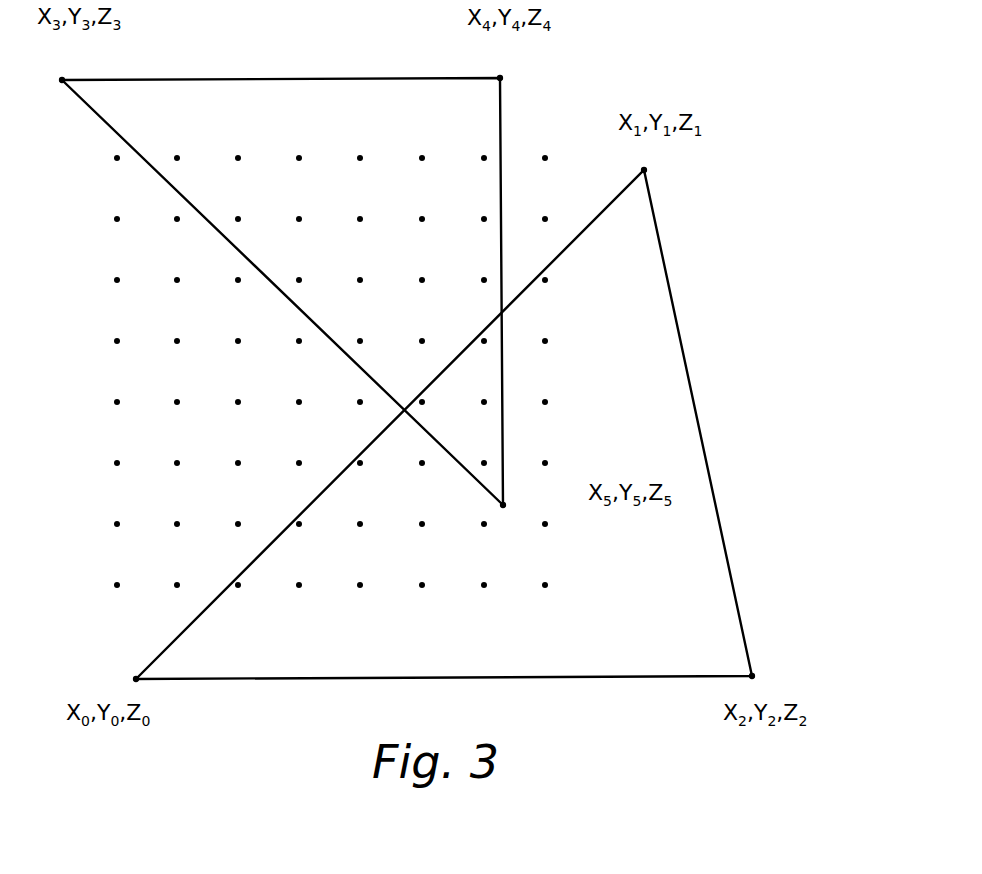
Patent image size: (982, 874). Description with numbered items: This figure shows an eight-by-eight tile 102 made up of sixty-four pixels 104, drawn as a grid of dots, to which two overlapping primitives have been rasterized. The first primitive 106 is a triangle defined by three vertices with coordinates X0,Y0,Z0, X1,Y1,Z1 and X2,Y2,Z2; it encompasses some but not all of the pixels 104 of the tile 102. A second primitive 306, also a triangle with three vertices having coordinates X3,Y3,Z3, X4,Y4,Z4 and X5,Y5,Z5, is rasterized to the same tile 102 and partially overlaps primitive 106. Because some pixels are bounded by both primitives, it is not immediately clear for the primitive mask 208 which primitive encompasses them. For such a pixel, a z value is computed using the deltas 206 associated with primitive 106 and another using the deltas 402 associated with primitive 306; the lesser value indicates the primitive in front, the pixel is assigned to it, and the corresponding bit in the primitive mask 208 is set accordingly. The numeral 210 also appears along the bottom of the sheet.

The tile 102 is at (332, 371).
The pixels 104 is at (115, 341).
The primitive 106 is at (698, 423).
The second primitive 306 is at (282, 79).
The deltas 206 is at (228, 873).
The primitive mask 208 is at (352, 873).
The deltas 402 is at (482, 873).
The adjacent-sheet numeral 210 is at (612, 873).